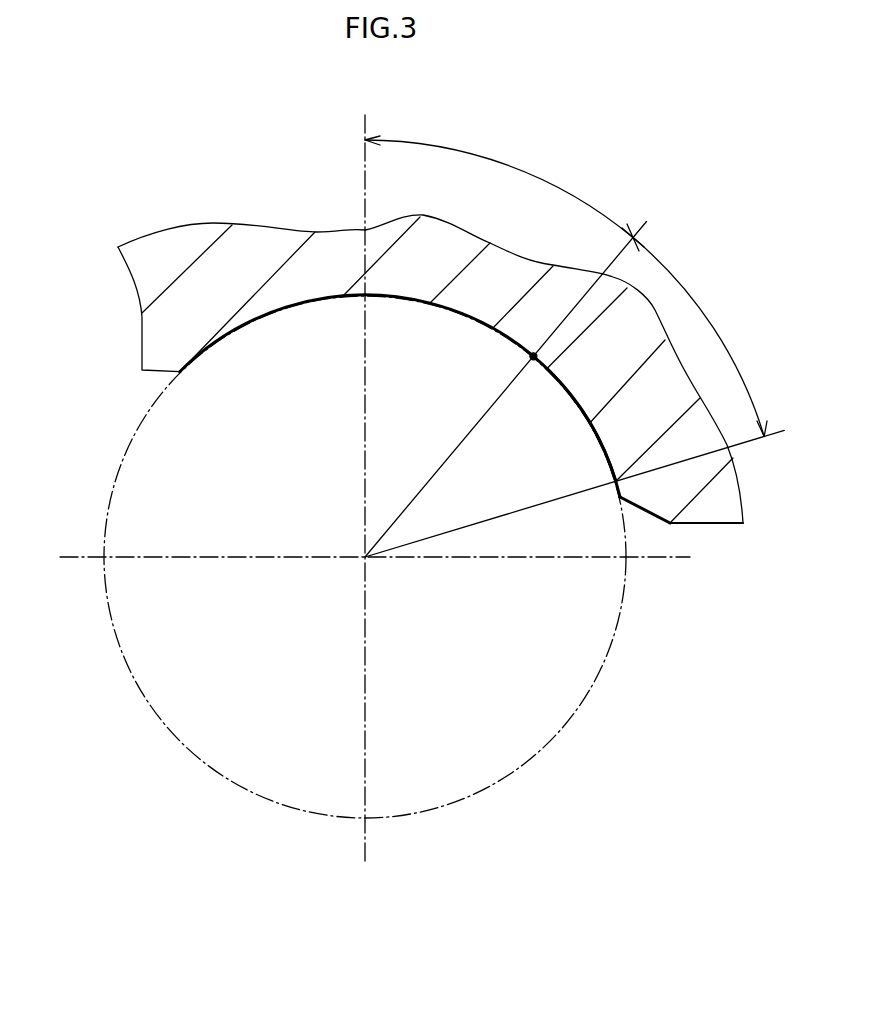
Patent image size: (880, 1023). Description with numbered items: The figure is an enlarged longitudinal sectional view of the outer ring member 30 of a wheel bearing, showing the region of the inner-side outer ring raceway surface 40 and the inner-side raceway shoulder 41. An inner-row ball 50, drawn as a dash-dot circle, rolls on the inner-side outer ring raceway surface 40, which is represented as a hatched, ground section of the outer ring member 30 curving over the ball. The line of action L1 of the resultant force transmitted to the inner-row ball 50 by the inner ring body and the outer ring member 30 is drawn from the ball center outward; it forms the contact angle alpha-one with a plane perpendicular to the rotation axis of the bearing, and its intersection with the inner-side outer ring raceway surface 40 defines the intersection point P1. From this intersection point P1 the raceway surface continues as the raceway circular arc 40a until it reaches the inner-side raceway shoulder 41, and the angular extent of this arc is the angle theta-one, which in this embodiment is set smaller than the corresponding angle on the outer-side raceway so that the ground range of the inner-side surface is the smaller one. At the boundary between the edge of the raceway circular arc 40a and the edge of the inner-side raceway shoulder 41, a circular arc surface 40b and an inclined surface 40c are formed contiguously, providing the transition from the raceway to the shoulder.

The outer ring member 30 is at (142, 332).
The inner-side outer ring raceway surface 40 is at (457, 313).
The raceway circular arc 40a is at (603, 452).
The circular arc surface 40b is at (618, 497).
The inclined surface 40c is at (645, 510).
The inner-side raceway shoulder 41 is at (697, 517).
The inner-row ball 50 is at (585, 675).
The intersection point P1 is at (533, 357).
The line of action L1 is at (633, 237).